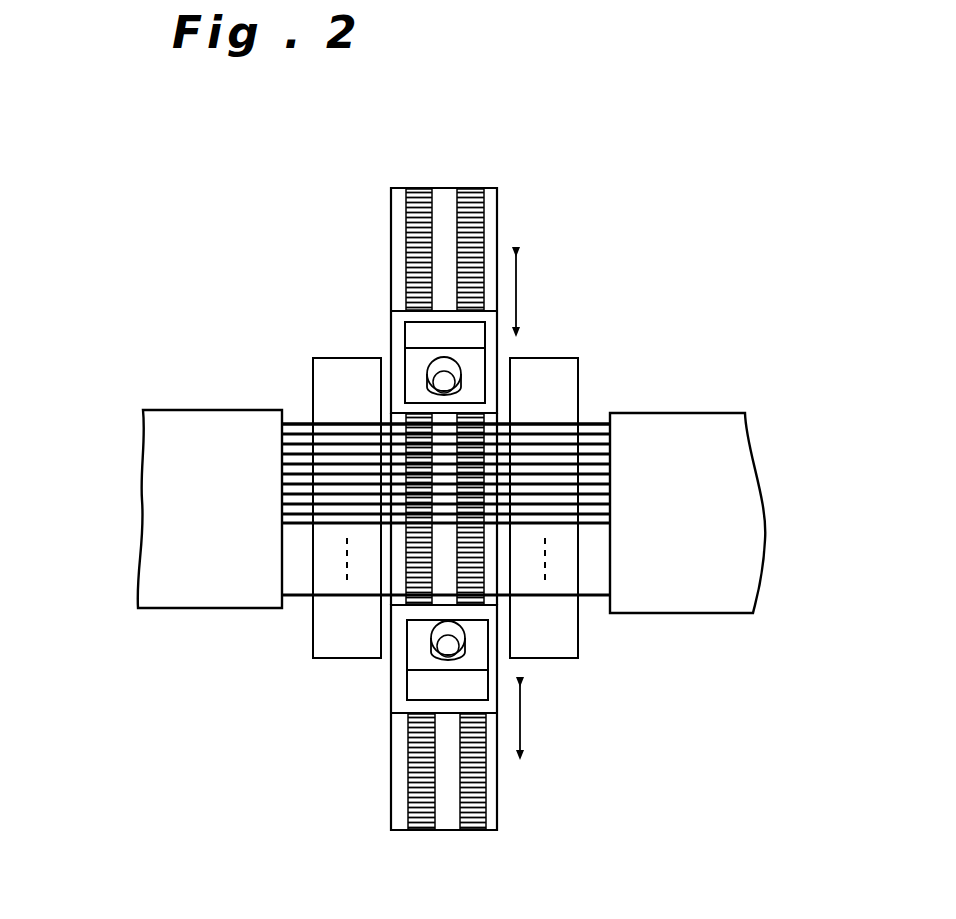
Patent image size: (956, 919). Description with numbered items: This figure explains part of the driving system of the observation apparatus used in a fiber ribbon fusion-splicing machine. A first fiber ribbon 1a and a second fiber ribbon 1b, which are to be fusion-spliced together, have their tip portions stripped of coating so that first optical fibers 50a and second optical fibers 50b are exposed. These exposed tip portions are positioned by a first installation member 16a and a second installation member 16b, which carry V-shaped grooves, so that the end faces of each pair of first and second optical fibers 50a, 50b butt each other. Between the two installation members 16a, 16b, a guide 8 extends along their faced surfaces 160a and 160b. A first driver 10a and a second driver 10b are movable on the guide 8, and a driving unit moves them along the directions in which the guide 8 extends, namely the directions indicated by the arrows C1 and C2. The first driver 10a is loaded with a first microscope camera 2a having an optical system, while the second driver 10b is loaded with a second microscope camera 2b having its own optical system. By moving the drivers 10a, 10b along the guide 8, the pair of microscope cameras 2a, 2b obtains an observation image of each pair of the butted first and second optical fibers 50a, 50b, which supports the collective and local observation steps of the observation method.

The first fiber ribbon 1a is at (165, 492).
The second fiber ribbon 1b is at (723, 483).
The first microscope camera 2a is at (417, 335).
The second microscope camera 2b is at (418, 684).
The guide 8 is at (448, 818).
The first driver 10a is at (398, 318).
The second driver 10b is at (400, 672).
The first installation member 16a is at (326, 377).
The second installation member 16b is at (560, 382).
The faced surface 160a is at (385, 570).
The faced surface 160b is at (507, 548).
The first optical fibers 50a is at (299, 612).
The second optical fibers 50b is at (554, 418).
The arrow C1 is at (516, 288).
The arrow C2 is at (521, 718).